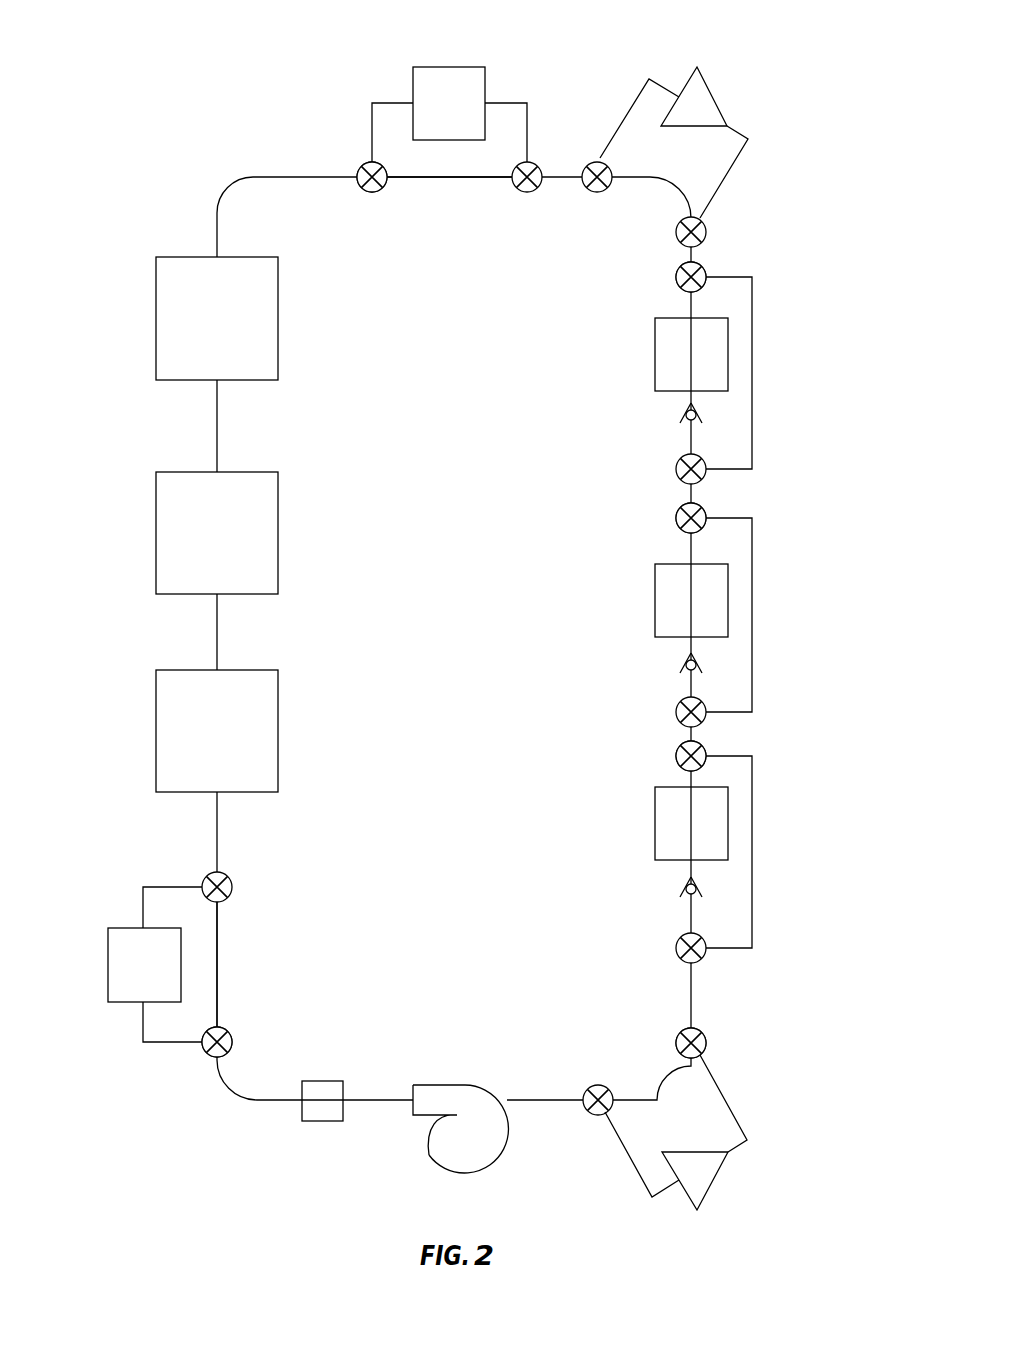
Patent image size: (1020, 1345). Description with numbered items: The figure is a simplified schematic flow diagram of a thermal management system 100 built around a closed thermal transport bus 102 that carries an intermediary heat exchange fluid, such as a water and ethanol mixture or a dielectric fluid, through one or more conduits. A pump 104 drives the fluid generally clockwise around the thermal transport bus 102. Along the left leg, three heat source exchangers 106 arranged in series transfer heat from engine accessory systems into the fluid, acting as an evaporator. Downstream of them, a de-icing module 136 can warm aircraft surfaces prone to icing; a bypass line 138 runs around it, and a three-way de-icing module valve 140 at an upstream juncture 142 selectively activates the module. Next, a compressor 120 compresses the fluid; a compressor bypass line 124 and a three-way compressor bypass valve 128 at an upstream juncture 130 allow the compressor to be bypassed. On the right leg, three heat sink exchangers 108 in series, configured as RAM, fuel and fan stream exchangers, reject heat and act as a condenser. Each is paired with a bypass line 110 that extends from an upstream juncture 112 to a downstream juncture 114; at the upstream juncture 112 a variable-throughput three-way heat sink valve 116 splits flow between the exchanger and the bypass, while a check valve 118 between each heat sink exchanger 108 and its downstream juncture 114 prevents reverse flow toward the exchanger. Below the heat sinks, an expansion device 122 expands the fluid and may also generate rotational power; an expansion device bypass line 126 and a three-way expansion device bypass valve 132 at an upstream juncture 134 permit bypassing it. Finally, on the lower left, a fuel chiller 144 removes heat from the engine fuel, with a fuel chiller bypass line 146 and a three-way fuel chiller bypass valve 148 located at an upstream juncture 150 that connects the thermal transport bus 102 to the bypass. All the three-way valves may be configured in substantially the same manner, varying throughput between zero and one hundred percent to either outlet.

The thermal management system 100 is at (108, 98).
The thermal transport bus 102 is at (253, 177).
The pump 104 is at (465, 1085).
The heat source exchanger 106 is at (156, 319).
The heat sink exchanger 108 is at (660, 366).
The bypass line 110 is at (752, 366).
The upstream juncture 112 is at (718, 264).
The downstream juncture 114 is at (716, 479).
The three-way heat sink valve 116 is at (676, 277).
The check valve 118 is at (679, 417).
The compressor 120 is at (715, 98).
The expansion device 122 is at (715, 1175).
The compressor bypass line 124 is at (650, 180).
The expansion device bypass line 126 is at (660, 1098).
The three-way compressor bypass valve 128 is at (594, 162).
The upstream juncture 130 is at (570, 186).
The three-way expansion device bypass valve 132 is at (707, 1043).
The upstream juncture 134 is at (718, 1022).
The de-icing module 136 is at (433, 80).
The bypass line 138 is at (445, 181).
The three-way de-icing module valve 140 is at (372, 192).
The upstream juncture 142 is at (346, 152).
The fuel chiller 144 is at (108, 973).
The fuel chiller bypass line 146 is at (219, 963).
The three-way fuel chiller bypass valve 148 is at (231, 1036).
The upstream juncture 150 is at (193, 1072).